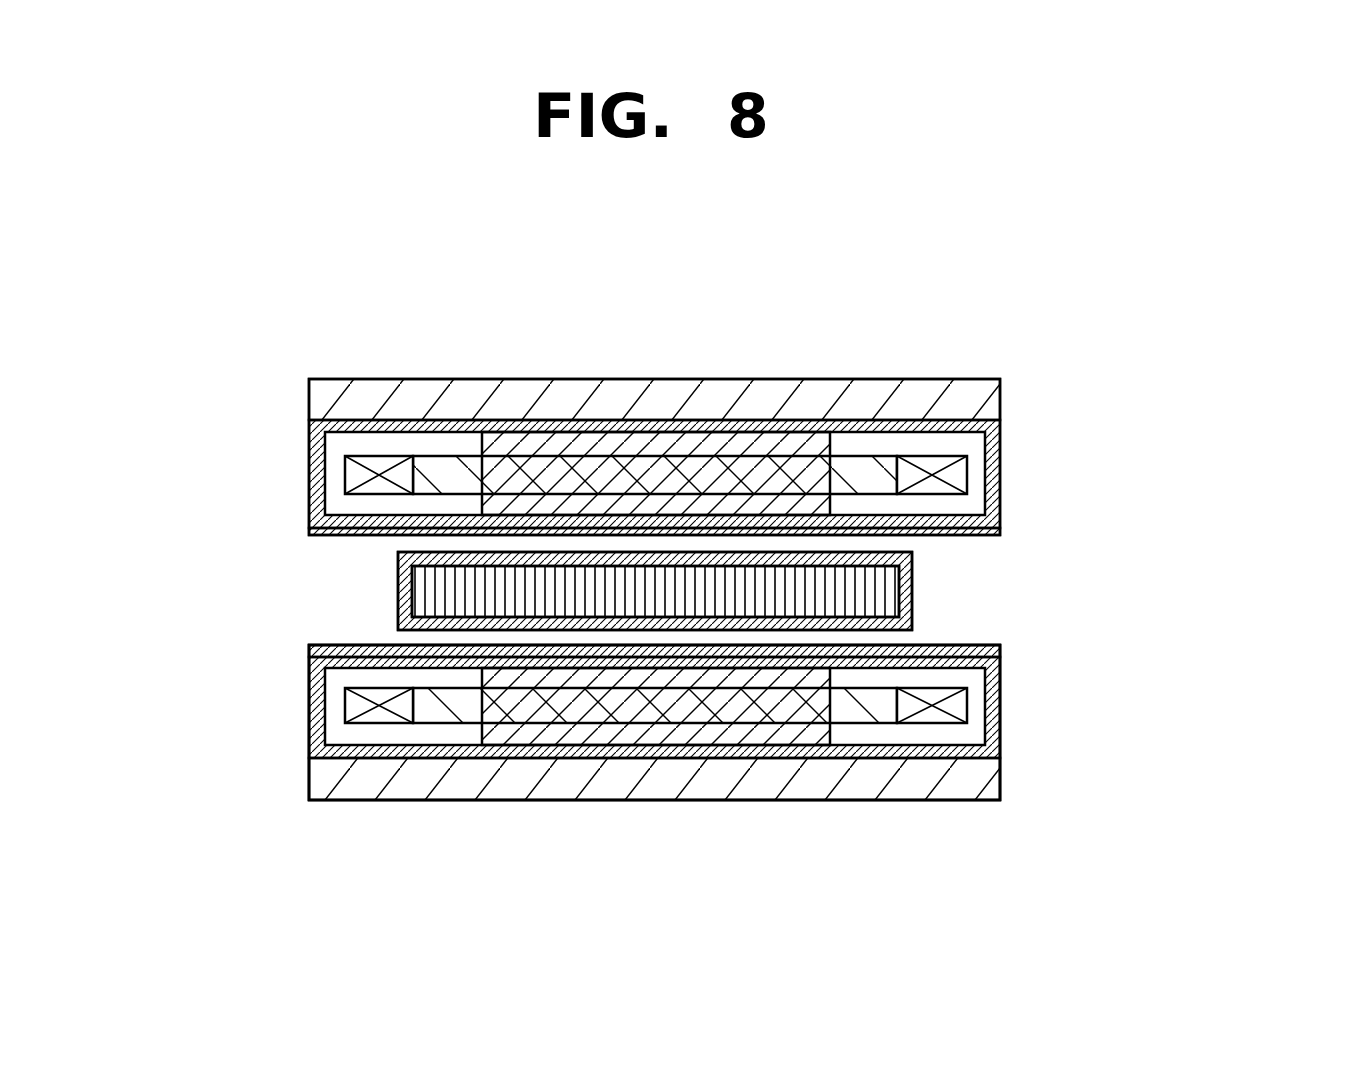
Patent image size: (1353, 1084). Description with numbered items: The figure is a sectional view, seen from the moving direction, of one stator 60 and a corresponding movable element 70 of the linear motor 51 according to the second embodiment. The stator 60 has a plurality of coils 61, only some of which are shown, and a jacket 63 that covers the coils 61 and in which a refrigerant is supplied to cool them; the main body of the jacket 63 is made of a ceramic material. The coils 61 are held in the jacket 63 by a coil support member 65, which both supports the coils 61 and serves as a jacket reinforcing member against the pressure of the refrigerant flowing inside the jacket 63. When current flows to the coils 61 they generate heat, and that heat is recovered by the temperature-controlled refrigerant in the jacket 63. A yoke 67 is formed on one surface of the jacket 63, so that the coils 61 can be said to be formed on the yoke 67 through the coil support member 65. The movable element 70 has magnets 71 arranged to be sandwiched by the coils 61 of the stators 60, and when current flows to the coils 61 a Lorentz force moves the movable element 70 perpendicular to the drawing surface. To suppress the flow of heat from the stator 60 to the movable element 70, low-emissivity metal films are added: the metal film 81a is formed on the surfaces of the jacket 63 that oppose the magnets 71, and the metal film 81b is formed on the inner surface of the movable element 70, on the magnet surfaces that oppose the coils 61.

The linear motor 51 is at (1180, 306).
The stator 60 is at (290, 818).
The coil 61 is at (352, 708).
The jacket 63 is at (1003, 718).
The coil support member 65 is at (553, 735).
The yoke 67 is at (850, 777).
The movable element 70 is at (661, 591).
The magnet 71 is at (913, 585).
The metal film 81a is at (1002, 530).
The metal film 81b is at (402, 598).